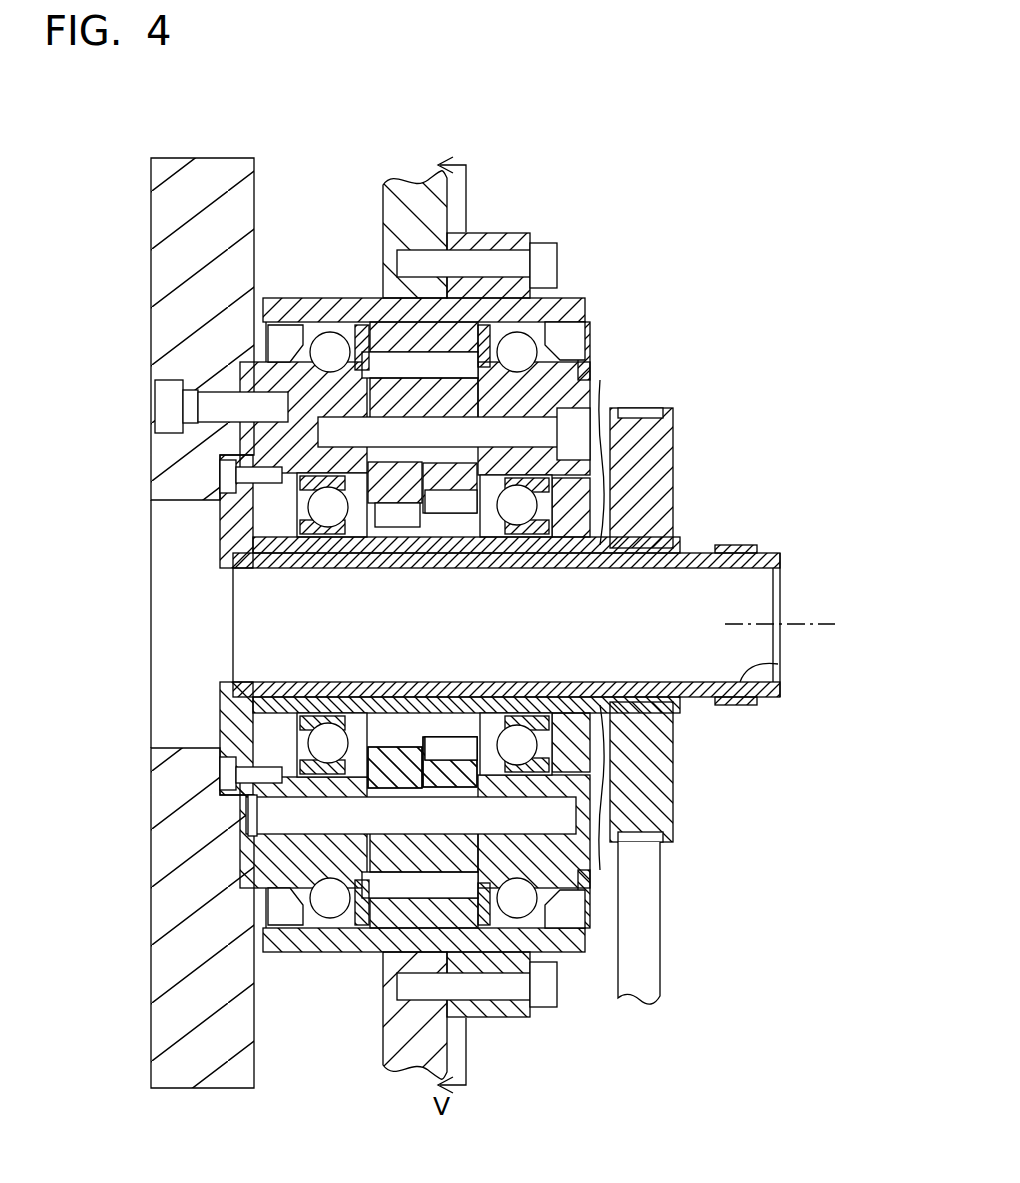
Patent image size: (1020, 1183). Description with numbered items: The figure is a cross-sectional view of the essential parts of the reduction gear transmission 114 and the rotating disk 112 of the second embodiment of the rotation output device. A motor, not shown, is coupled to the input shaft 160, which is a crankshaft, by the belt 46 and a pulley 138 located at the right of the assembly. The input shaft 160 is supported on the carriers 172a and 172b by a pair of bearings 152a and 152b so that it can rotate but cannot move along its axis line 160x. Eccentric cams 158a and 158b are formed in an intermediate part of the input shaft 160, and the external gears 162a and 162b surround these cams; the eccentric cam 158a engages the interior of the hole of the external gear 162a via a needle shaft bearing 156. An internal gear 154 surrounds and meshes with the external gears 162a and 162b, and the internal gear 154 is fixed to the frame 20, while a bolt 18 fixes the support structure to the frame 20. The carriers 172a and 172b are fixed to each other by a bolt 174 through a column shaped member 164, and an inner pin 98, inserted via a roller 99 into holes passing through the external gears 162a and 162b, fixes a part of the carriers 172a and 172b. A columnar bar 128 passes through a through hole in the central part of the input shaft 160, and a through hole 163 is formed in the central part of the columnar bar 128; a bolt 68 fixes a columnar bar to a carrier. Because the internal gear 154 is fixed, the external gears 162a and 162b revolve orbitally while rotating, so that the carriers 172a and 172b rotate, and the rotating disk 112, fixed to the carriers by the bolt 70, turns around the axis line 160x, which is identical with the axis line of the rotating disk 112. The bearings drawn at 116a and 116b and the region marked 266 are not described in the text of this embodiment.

The rotating disk 112 is at (176, 200).
The opening 266 is at (182, 504).
The internal gear 154 is at (360, 310).
The bolt 174 is at (600, 400).
The carrier 172a is at (285, 362).
The carrier 172b is at (598, 380).
The bearing 116a is at (330, 350).
The bearing 116b is at (522, 350).
The needle shaft bearing 156 is at (400, 520).
The eccentric cam 158b is at (447, 707).
The eccentric cam 158a is at (397, 722).
The bolt 68 is at (228, 478).
The pulley 138 is at (650, 466).
The frame 20 is at (392, 195).
The bolt 18 is at (545, 250).
The column shaped member 164 is at (583, 375).
The input shaft 160 is at (575, 432).
The reduction gear transmission 114 is at (438, 344).
The bearing 152a is at (328, 905).
The bearing 152b is at (570, 898).
The external gear 162a is at (383, 790).
The external gear 162b is at (545, 770).
The roller 99 is at (460, 720).
The inner pin 98 is at (268, 818).
The belt 46 is at (640, 928).
The bolt 70 is at (168, 405).
The columnar bar 128 is at (690, 548).
The axis line 160x is at (800, 618).
The through hole 163 is at (760, 665).